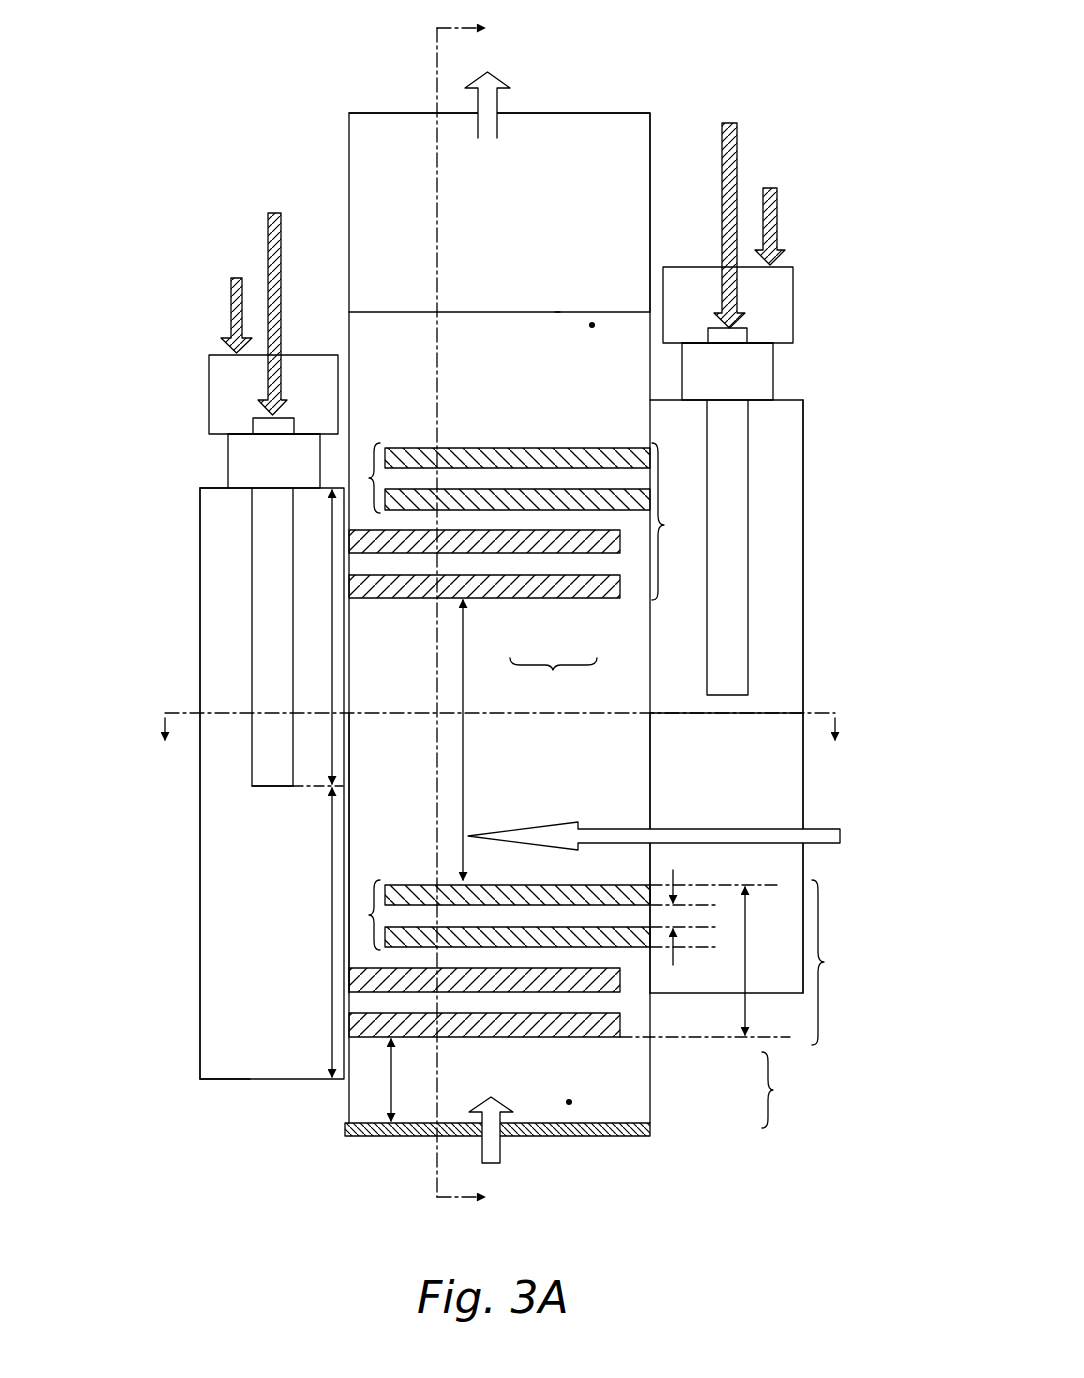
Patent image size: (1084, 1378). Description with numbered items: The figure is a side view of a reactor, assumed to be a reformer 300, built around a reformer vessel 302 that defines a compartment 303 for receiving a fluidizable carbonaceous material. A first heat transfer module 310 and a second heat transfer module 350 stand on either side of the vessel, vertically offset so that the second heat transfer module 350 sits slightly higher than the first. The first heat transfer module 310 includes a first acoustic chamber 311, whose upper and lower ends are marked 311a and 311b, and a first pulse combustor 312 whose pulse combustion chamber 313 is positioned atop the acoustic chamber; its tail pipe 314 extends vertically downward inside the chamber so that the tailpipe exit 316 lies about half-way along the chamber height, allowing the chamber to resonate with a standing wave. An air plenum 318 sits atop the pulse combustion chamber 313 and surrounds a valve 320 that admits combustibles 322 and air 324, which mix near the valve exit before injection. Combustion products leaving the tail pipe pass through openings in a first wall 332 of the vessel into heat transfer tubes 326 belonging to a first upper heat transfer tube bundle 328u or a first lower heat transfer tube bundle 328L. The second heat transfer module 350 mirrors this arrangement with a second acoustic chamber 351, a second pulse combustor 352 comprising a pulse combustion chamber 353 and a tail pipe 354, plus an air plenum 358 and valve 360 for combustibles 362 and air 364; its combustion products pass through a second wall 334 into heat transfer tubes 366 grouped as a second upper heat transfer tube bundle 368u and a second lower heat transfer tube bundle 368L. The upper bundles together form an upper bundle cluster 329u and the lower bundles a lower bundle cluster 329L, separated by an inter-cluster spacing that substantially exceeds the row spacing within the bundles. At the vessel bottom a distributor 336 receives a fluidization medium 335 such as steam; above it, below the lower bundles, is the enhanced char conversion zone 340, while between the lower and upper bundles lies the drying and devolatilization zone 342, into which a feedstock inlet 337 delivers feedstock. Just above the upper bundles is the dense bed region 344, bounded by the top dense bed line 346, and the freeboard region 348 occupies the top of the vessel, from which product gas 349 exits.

The reformer 300 is at (163, 27).
The reformer vessel 302 is at (347, 139).
The compartment 303 is at (368, 272).
The first heat transfer module 310 is at (198, 893).
The first acoustic chamber 311 is at (198, 688).
The left tube upper end 311a is at (212, 492).
The left tube lower end 311b is at (245, 1078).
The first pulse combustor 312 is at (226, 465).
The pulse combustion chamber 313 is at (242, 457).
The tail pipe 314 is at (251, 587).
The tailpipe exit 316 is at (258, 787).
The air plenum 318 is at (208, 388).
The valve 320 is at (252, 427).
The combustibles 322 is at (267, 222).
The air 324 is at (230, 303).
The heat transfer tubes 326 is at (541, 553).
The first upper heat transfer tube bundle 328u is at (553, 682).
The first lower heat transfer tube bundle 328L is at (791, 1090).
The upper bundle cluster 329u is at (666, 525).
The lower bundle cluster 329L is at (846, 962).
The first wall 332 is at (350, 783).
The second wall 334 is at (650, 773).
The fluidization medium 335 is at (500, 1150).
The distributor 336 is at (630, 1130).
The feedstock inlet 337 is at (840, 845).
The enhanced char conversion zone 340 is at (569, 1105).
The drying and devolatilization zone 342 is at (625, 750).
The dense bed region 344 is at (594, 323).
The top dense bed line 346 is at (560, 305).
The freeboard region 348 is at (600, 130).
The product gas 349 is at (508, 100).
The second heat transfer module 350 is at (806, 797).
The second acoustic chamber 351 is at (804, 625).
The second pulse combustor 352 is at (783, 388).
The pulse combustion chamber 353 is at (774, 373).
The tail pipe 354 is at (749, 472).
The air plenum 358 is at (794, 292).
The valve 360 is at (748, 337).
The combustibles 362 is at (738, 155).
The air 364 is at (778, 218).
The heat transfer tubes 366 is at (497, 490).
The second upper heat transfer tube bundle 368u is at (373, 445).
The second lower heat transfer tube bundle 368L is at (370, 882).